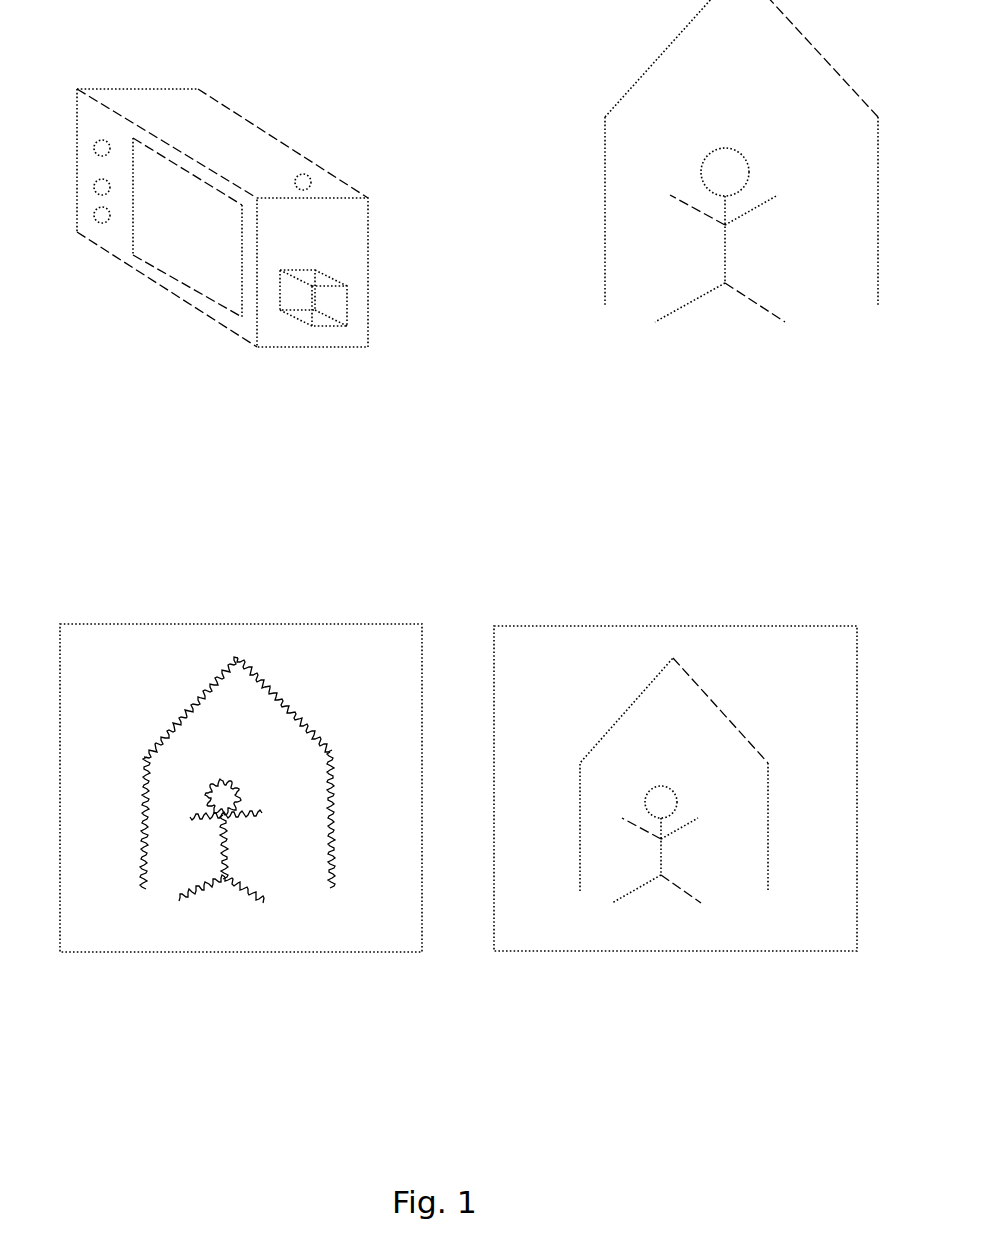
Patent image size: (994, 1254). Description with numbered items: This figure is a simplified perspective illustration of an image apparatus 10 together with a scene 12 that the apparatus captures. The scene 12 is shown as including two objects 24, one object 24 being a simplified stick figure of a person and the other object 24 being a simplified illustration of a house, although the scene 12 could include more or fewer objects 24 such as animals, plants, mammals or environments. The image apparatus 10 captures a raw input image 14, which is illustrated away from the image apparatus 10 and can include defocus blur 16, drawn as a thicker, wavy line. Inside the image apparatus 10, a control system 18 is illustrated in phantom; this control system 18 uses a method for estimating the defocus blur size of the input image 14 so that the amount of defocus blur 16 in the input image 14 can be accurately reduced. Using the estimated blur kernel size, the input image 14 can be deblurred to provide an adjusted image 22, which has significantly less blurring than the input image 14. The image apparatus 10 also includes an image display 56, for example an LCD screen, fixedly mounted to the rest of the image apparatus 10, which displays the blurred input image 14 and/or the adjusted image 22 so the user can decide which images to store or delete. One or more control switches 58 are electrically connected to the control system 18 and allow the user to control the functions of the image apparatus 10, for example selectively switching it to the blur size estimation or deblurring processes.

The image apparatus 10 is at (248, 184).
The scene 12 is at (645, 161).
The raw input image 14 is at (241, 782).
The defocus blur 16 is at (238, 654).
The control system 18 is at (345, 309).
The adjusted image 22 is at (684, 970).
The object 24 is at (605, 192).
The image display 56 is at (187, 257).
The control switch 58 is at (98, 221).